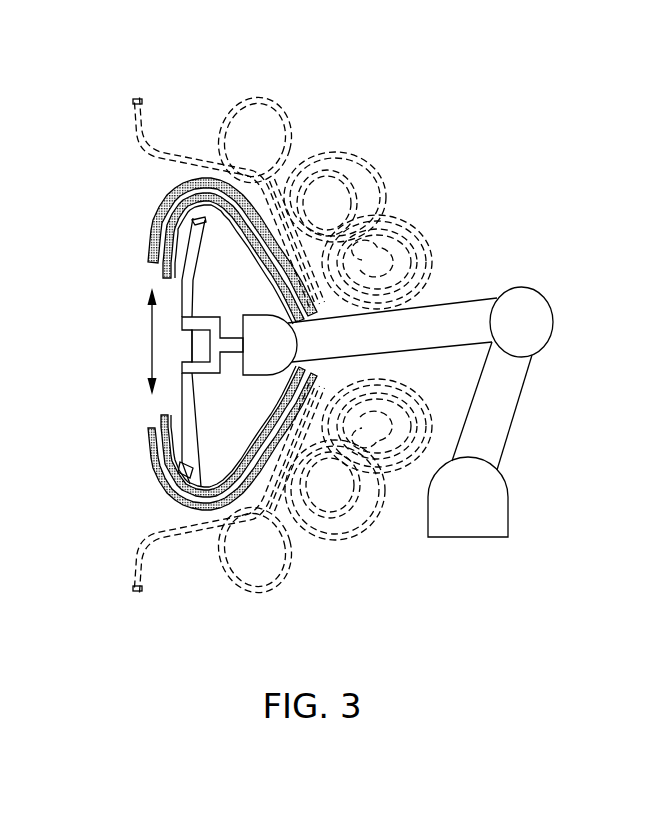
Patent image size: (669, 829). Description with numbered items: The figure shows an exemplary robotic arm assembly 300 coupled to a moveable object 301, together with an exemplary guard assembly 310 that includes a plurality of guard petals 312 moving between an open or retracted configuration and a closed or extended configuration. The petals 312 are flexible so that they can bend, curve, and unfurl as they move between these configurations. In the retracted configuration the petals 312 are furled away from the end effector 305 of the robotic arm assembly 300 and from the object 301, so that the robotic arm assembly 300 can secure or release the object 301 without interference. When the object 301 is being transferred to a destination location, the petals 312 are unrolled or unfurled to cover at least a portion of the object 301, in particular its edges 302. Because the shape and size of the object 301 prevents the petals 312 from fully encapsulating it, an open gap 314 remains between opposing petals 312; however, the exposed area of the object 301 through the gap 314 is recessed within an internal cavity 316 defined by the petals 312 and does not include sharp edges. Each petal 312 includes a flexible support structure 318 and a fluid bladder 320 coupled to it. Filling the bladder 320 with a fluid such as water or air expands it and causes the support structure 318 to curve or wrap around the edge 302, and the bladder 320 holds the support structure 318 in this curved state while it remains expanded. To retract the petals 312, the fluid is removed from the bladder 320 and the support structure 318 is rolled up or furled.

The robotic arm assembly 300 is at (575, 253).
The moveable object 301 is at (181, 292).
The edges 302 is at (203, 217).
The end effector 305 is at (218, 290).
The guard assembly 310 is at (114, 94).
The guard petals 312 is at (138, 224).
The open gap 314 is at (148, 338).
The internal cavity 316 is at (240, 421).
The flexible support structure 318 is at (203, 495).
The fluid bladder 320 is at (158, 462).